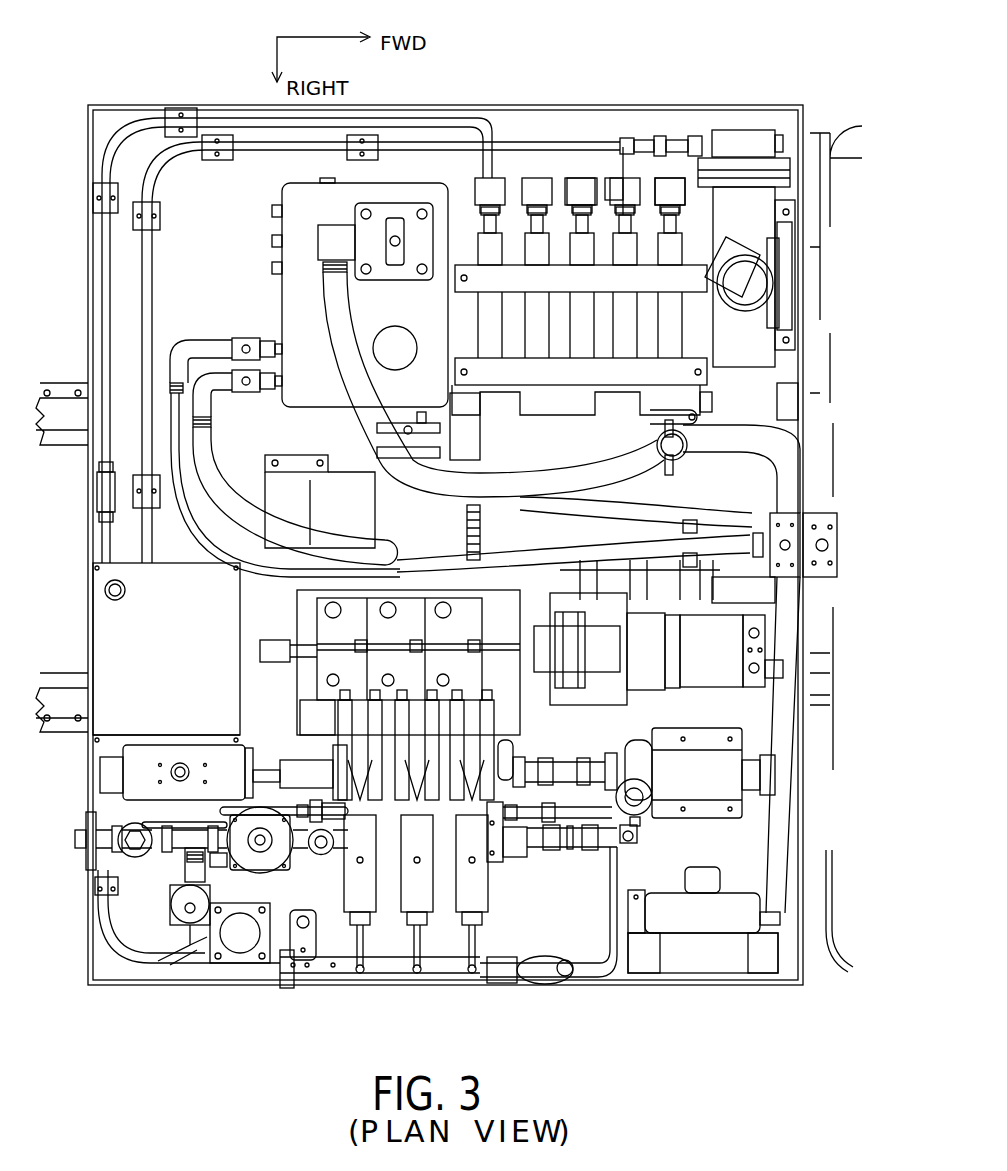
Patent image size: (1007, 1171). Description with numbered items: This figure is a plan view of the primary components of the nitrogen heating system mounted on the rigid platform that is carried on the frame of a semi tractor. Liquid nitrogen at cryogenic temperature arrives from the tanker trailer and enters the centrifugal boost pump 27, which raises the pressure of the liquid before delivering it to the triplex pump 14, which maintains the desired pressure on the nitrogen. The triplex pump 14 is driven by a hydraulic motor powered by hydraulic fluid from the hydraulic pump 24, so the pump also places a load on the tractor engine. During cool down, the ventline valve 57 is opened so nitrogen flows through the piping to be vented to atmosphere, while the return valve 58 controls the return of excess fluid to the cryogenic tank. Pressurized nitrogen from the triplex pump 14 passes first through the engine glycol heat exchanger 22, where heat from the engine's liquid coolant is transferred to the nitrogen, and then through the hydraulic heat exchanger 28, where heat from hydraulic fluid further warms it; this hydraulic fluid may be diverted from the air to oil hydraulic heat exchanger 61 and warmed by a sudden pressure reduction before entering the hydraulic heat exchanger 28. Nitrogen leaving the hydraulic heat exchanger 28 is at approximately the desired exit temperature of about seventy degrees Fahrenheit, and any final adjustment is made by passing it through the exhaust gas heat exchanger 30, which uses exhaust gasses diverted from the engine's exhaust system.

The triplex pump 14 is at (383, 900).
The engine glycol heat exchanger 22 is at (570, 228).
The hydraulic pump 24 is at (745, 690).
The centrifugal boost pump 27 is at (745, 745).
The hydraulic heat exchanger 28 is at (660, 232).
The exhaust gas heat exchanger 30 is at (753, 235).
The ventline valve 57 is at (185, 915).
The return valve 58 is at (228, 845).
The air to oil hydraulic heat exchanger 61 is at (775, 950).